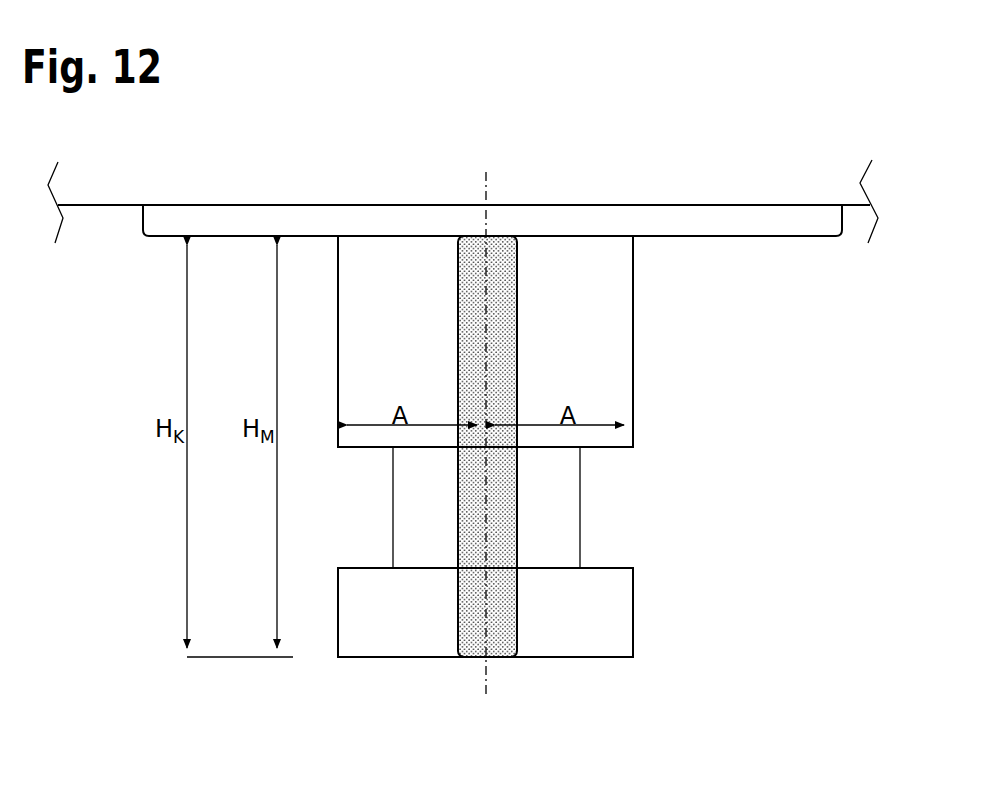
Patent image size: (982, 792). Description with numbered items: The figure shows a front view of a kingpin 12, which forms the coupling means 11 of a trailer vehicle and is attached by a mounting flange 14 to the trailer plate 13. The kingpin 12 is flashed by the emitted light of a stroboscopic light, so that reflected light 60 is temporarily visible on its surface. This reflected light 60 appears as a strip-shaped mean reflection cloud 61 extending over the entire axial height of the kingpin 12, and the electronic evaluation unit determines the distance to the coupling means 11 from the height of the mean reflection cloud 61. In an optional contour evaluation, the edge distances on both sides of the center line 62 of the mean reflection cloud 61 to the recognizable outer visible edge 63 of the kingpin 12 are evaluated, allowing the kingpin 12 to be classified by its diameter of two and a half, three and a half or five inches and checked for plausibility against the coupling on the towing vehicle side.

The trailer vehicle coupling means 11 is at (757, 484).
The kingpin 12 is at (689, 526).
The trailer plate 13 is at (110, 207).
The mounting flange 14 is at (807, 236).
The reflected light 60 is at (541, 395).
The mean reflection cloud 61 is at (518, 325).
The center line of mean reflection cloud 62 is at (485, 673).
The outer visible edge of kingpin 63 is at (633, 378).